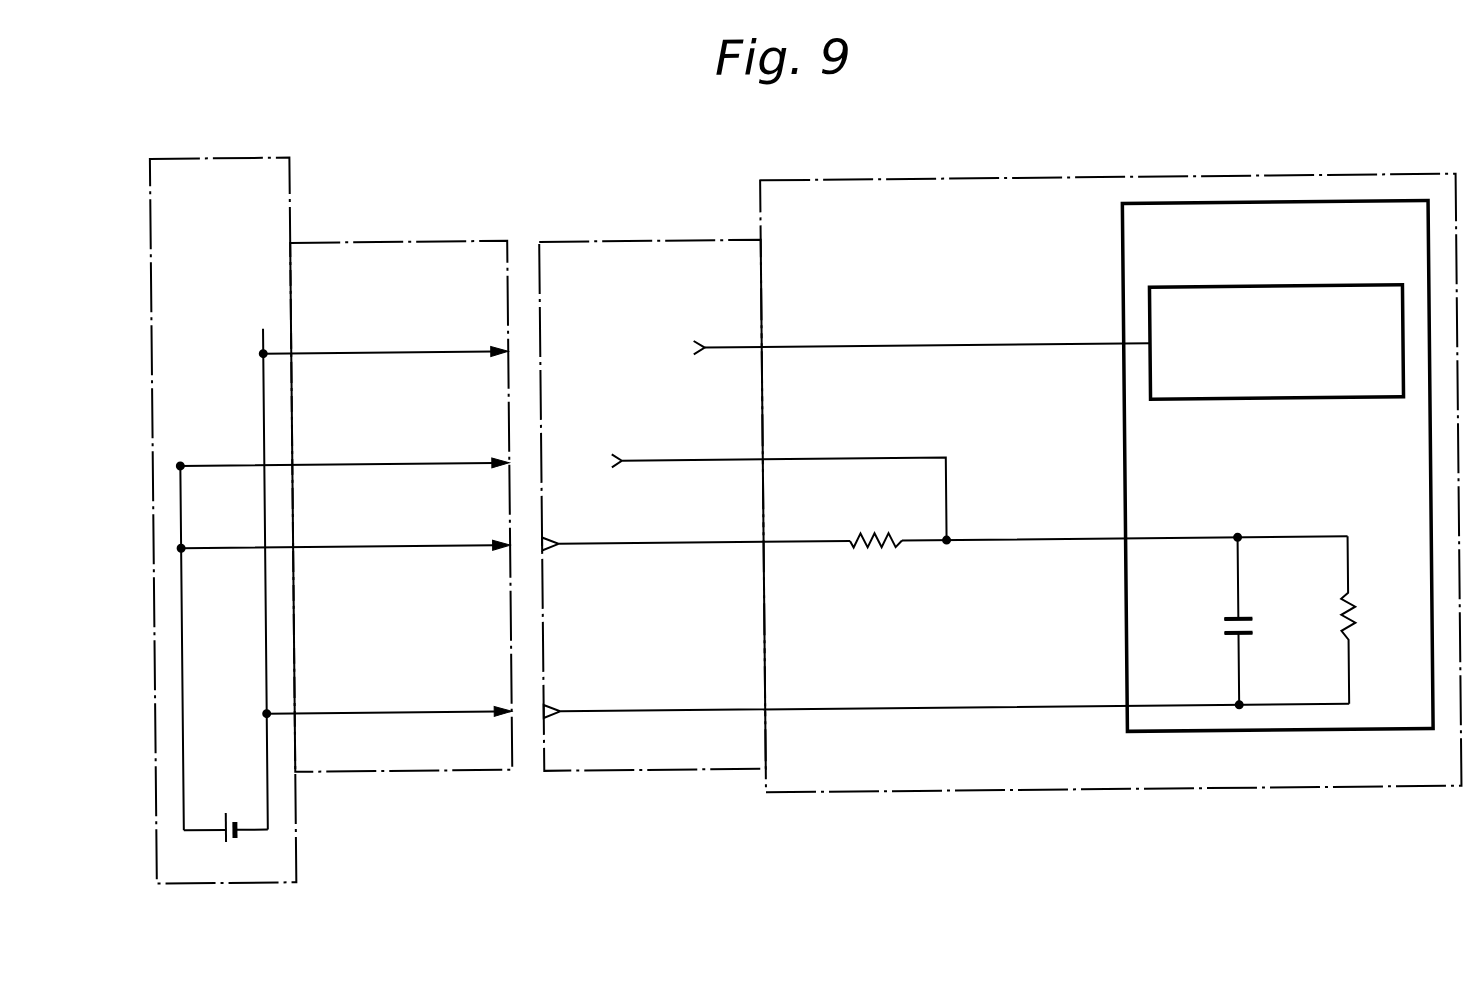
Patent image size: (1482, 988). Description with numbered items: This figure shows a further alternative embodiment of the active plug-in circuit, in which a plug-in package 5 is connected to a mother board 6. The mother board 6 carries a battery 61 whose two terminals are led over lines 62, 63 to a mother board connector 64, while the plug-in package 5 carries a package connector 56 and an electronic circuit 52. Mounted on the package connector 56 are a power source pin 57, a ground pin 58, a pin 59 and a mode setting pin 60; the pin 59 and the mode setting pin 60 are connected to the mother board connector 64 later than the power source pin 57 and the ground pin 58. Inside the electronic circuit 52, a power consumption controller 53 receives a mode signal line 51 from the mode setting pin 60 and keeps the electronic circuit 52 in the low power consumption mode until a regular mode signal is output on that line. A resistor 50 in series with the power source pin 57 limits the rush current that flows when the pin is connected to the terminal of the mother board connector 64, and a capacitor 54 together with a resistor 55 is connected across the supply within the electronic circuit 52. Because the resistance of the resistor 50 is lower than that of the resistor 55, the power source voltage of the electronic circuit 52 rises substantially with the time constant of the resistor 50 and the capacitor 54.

The plug-in package 5 is at (1300, 180).
The mother board 6 is at (293, 178).
The resistor 50 is at (861, 550).
The mode signal line 51 is at (991, 342).
The electronic circuit 52 is at (1124, 243).
The power consumption controller 53 is at (1301, 404).
The capacitor 54 is at (1221, 634).
The resistor 55 is at (1359, 625).
The package connector 56 is at (597, 236).
The power source pin 57 is at (559, 538).
The ground pin 58 is at (556, 704).
The pin 59 is at (622, 458).
The mode setting pin 60 is at (696, 347).
The battery 61 is at (229, 806).
The power supply line 62 is at (181, 449).
The power supply line 63 is at (263, 370).
The mother board connector 64 is at (433, 236).